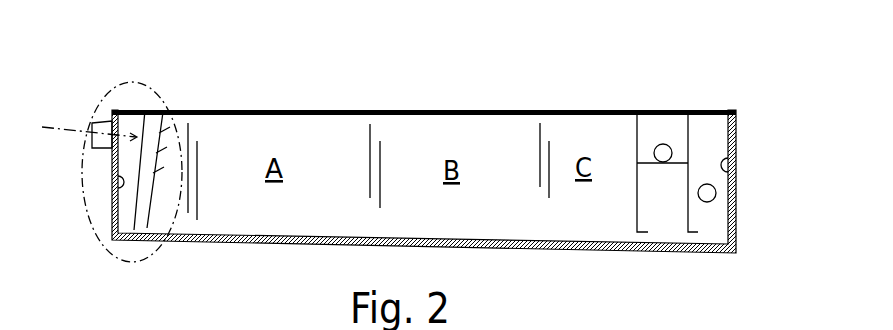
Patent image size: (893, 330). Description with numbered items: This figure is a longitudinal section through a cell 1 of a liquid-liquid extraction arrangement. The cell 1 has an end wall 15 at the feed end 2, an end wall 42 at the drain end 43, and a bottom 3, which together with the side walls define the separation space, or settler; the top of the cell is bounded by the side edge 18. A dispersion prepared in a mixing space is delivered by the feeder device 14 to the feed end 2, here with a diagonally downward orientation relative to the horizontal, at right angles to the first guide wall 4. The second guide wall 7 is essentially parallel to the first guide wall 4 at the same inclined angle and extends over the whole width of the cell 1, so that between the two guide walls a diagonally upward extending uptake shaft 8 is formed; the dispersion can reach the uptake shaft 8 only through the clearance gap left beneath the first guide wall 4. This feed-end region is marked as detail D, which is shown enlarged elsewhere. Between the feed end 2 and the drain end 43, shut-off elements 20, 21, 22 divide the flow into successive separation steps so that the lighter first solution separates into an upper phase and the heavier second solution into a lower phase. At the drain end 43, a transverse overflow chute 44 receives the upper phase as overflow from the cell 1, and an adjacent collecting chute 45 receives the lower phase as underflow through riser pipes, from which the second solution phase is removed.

The cell 1 is at (424, 145).
The feed end 2 is at (129, 92).
The bottom 3 is at (290, 236).
The first guide wall 4 is at (145, 110).
The second guide wall 7 is at (163, 112).
The uptake shaft 8 is at (141, 221).
The feeder device 14 is at (96, 120).
The end wall 15 is at (118, 186).
The side edge 18 is at (240, 110).
The shut-off element 20 is at (198, 133).
The shut-off element 21 is at (378, 128).
The shut-off element 22 is at (546, 122).
The end wall 42 is at (736, 172).
The drain end 43 is at (686, 116).
The overflow chute 44 is at (667, 133).
The collecting chute 45 is at (713, 132).
The detail D is at (98, 237).